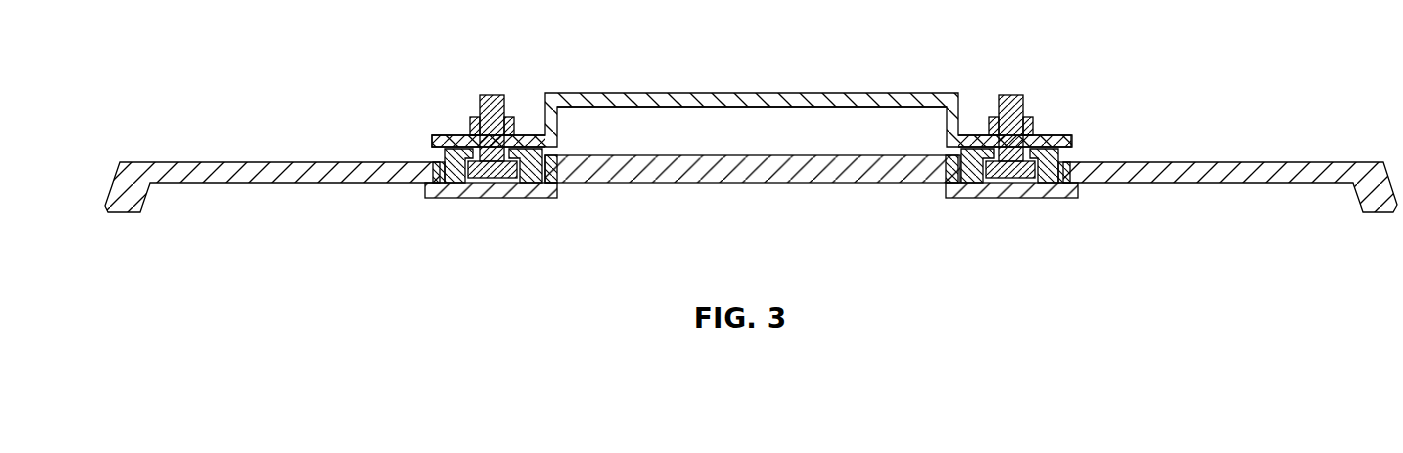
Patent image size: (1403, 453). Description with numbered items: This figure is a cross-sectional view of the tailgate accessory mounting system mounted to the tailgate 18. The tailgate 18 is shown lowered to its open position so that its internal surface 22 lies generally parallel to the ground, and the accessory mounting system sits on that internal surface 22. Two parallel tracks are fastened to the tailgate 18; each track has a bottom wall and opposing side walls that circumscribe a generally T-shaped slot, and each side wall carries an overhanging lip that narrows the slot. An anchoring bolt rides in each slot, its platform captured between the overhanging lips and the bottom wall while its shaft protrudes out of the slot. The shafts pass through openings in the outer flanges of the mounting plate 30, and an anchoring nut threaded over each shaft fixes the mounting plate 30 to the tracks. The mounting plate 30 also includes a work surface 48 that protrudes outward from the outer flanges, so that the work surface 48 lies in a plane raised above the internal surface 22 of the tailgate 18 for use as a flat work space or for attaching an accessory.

The tailgate 18 is at (751, 143).
The internal surface 22 is at (1207, 162).
The mounting plate 30 is at (752, 84).
The work surface 48 is at (723, 93).